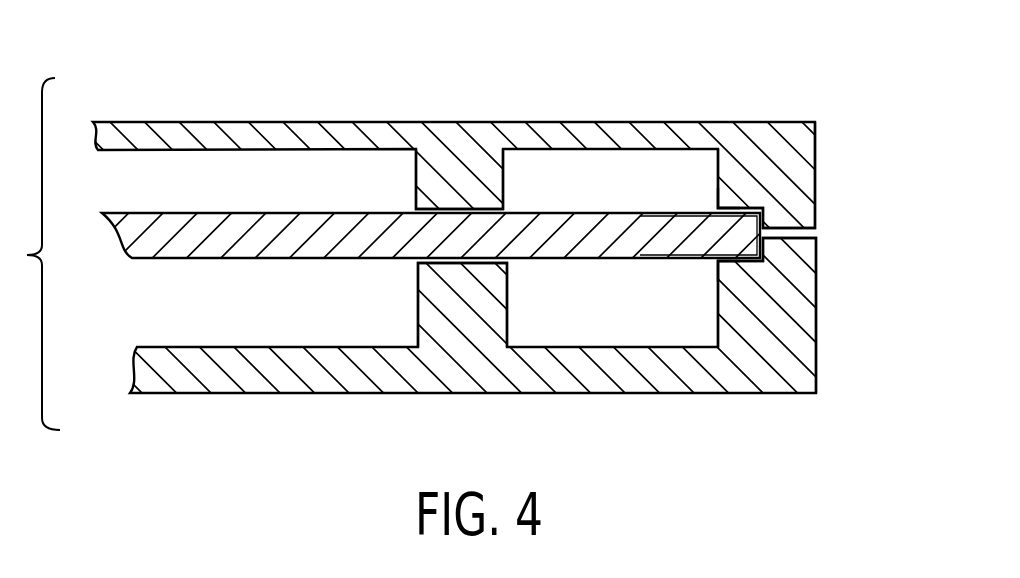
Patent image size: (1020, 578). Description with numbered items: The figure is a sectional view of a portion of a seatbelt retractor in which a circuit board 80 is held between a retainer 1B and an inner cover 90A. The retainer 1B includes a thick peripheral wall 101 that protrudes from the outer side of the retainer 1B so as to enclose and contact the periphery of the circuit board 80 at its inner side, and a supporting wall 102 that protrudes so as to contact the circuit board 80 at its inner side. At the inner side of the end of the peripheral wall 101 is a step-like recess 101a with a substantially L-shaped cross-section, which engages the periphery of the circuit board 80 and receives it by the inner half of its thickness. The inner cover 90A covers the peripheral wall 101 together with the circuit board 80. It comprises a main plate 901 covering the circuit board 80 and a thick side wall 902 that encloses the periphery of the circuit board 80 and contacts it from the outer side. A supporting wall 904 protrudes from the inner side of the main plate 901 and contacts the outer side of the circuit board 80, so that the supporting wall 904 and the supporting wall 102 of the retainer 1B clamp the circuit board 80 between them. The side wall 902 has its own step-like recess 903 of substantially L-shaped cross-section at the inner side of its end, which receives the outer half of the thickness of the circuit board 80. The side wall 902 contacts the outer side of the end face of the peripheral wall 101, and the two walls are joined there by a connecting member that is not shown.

The inner cover 90A is at (516, 108).
The main plate 901 is at (309, 122).
The side wall 902 is at (816, 207).
The step-like recess 903 is at (733, 206).
The supporting wall 904 is at (408, 209).
The circuit board 80 is at (209, 223).
The retainer 1B is at (543, 378).
The peripheral wall 101 is at (816, 303).
The step-like recess 101a is at (735, 263).
The supporting wall 102 is at (417, 321).